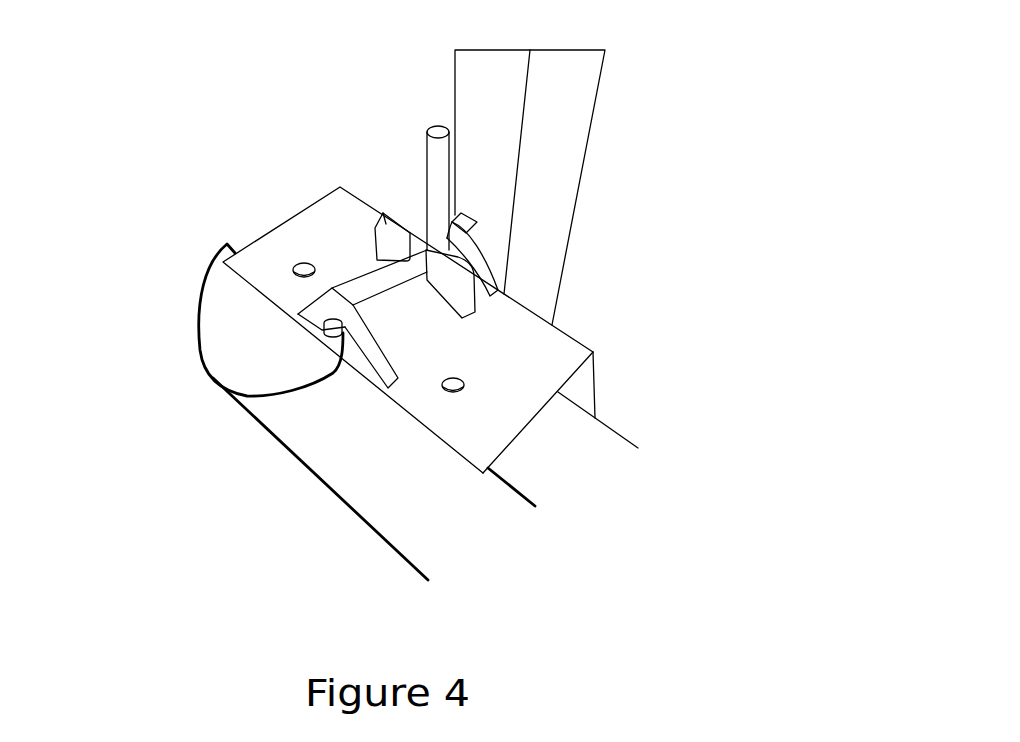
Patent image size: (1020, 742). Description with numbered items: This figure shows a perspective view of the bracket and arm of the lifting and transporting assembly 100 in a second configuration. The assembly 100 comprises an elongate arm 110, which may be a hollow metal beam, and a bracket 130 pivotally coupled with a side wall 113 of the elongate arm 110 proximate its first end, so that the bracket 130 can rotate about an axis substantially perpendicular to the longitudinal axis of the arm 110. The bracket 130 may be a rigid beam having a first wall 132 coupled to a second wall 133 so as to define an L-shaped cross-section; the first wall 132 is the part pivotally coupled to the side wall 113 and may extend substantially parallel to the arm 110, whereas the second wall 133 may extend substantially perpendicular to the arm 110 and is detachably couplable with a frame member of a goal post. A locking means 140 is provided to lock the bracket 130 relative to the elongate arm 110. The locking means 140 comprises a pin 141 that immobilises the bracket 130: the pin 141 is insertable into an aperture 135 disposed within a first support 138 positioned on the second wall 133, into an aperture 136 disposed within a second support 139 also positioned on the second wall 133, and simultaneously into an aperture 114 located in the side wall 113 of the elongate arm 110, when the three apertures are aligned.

The assembly 100 is at (526, 165).
The elongate arm 110 is at (521, 187).
The side wall 113 is at (470, 103).
The aperture 114 is at (470, 220).
The bracket 130 is at (516, 330).
The first wall 132 is at (588, 391).
The second wall 133 is at (523, 388).
The aperture 135 is at (243, 400).
The aperture 136 is at (448, 242).
The first support 138 is at (358, 362).
The second support 139 is at (420, 235).
The locking means 140 is at (427, 178).
The pin 141 is at (390, 295).